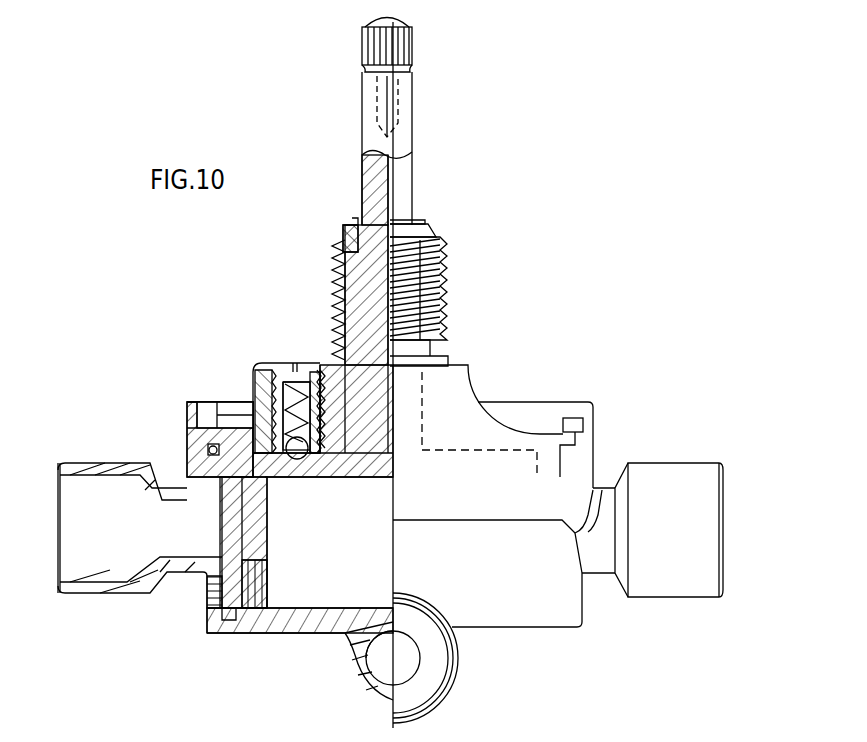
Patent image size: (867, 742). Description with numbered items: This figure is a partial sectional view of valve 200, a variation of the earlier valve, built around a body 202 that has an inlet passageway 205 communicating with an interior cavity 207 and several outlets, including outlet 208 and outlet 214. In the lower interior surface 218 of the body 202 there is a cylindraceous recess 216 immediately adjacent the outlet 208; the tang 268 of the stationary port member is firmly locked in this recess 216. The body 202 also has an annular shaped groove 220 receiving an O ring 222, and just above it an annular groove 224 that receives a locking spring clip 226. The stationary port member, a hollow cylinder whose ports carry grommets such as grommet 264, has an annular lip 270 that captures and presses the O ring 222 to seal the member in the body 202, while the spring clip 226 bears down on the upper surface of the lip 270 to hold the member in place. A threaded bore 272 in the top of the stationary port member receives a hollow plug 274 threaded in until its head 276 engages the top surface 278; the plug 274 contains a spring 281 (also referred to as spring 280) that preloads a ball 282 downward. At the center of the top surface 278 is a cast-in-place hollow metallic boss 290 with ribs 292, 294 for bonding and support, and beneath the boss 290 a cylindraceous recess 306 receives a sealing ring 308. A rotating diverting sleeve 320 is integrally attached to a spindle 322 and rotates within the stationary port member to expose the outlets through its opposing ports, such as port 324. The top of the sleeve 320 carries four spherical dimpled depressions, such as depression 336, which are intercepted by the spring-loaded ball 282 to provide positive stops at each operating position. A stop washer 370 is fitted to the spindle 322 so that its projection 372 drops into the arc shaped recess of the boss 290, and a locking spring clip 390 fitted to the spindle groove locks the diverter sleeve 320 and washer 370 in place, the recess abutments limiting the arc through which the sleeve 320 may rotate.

The valve 200 is at (525, 664).
The body 202 is at (303, 635).
The inlet passageway 205 is at (432, 680).
The interior cavity 207 is at (400, 570).
The outlet 208 is at (58, 573).
The outlet 214 is at (725, 470).
The cylindraceous recess 216 is at (233, 623).
The lower interior surface 218 is at (348, 590).
The annular shaped groove 220 is at (152, 481).
The O ring 222 is at (209, 448).
The annular groove 224 is at (190, 425).
The locking spring clip 226 is at (217, 400).
The grommet 264 is at (250, 568).
The tang 268 is at (202, 623).
The annular lip 270 is at (217, 418).
The threaded bore 272 is at (346, 478).
The hollow plug 274 is at (280, 363).
The head 276 is at (284, 405).
The top surface 278 is at (460, 367).
The spring 280 is at (320, 356).
The spring 281 is at (275, 410).
The ball 282 is at (225, 533).
The hollow metallic boss 290 is at (447, 275).
The rib 292 is at (338, 383).
The rib 294 is at (330, 420).
The cylindraceous recess 306 is at (325, 478).
The sealing ring 308 is at (360, 478).
The rotating diverting sleeve 320 is at (278, 496).
The spindle 322 is at (412, 160).
The port 324 is at (200, 593).
The spherical dimpled depression 336 is at (223, 508).
The stop washer 370 is at (432, 226).
The projection 372 is at (345, 224).
The locking spring clip 390 is at (425, 222).